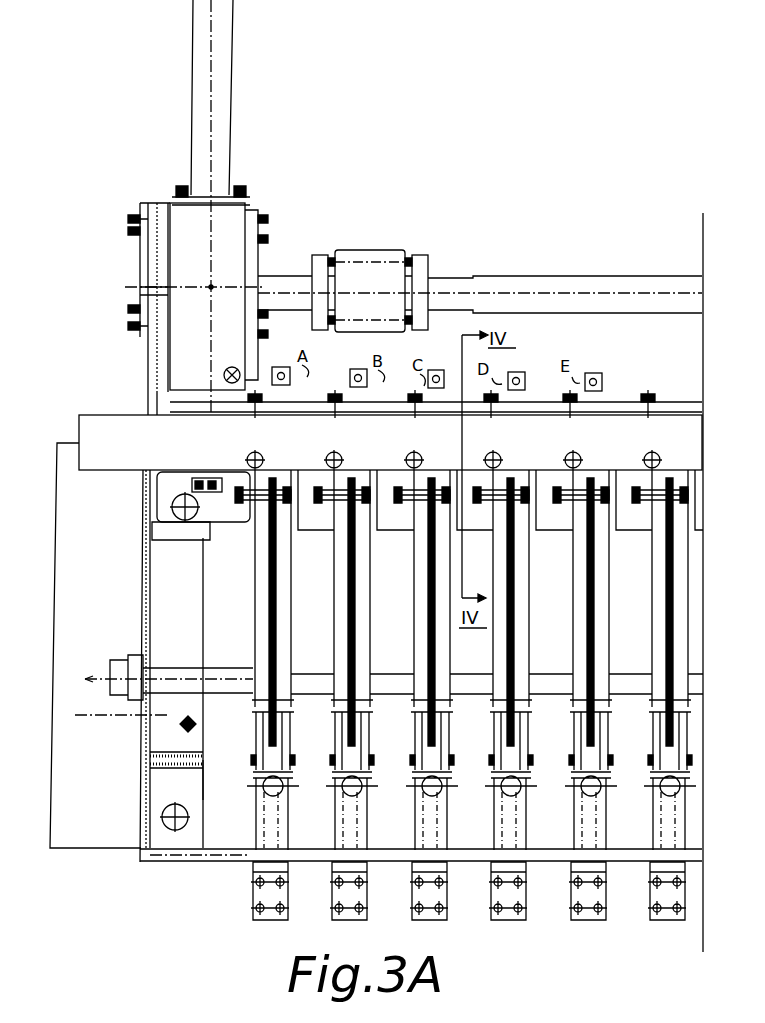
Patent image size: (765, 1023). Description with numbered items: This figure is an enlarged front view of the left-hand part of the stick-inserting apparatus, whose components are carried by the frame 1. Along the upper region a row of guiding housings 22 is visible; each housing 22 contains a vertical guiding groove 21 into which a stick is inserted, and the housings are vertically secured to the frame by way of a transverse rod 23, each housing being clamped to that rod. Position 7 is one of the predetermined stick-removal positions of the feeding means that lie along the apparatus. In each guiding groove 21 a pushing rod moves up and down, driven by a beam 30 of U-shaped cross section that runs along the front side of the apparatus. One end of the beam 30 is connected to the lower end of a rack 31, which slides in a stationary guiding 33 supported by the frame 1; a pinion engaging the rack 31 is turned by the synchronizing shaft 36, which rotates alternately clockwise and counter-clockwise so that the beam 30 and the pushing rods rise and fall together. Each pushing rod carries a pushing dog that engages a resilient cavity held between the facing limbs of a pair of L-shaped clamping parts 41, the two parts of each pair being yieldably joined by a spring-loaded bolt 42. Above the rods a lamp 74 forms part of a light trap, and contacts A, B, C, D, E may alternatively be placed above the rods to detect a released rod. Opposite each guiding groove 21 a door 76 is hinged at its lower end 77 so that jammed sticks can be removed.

The frame 1 is at (58, 722).
The position 7 is at (214, 780).
The vertical guiding groove 21 is at (355, 820).
The guiding housing 22 is at (574, 590).
The transverse rod 23 is at (237, 518).
The beam 30 is at (594, 426).
The rack 31 is at (237, 98).
The stationary guiding 33 is at (233, 220).
The synchronizing shaft 36 is at (566, 292).
The L-shaped clamping part 41 is at (525, 504).
The bolt 42 is at (554, 488).
The lamp 74 is at (232, 367).
The door 76 is at (254, 822).
The lower end 77 is at (492, 878).